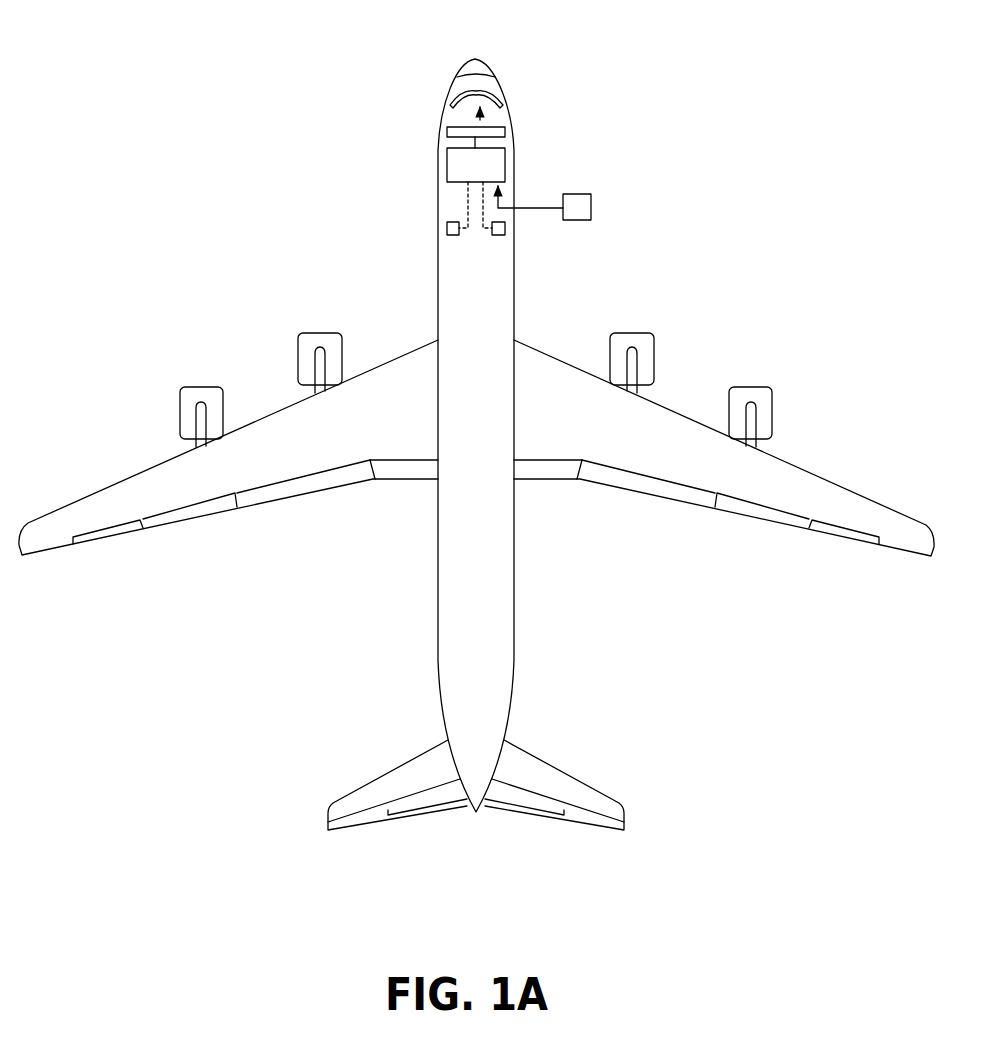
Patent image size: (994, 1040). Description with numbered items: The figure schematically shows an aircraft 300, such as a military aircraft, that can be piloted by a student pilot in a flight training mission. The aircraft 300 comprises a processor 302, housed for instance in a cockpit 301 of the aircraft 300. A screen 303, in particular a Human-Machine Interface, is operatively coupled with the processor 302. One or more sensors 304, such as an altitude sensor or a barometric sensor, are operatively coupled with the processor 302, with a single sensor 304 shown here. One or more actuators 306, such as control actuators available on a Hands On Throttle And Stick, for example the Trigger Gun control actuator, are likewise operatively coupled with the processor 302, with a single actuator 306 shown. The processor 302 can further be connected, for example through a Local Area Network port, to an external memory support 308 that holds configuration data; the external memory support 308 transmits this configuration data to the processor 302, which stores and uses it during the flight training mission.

The aircraft 300 is at (374, 89).
The cockpit 301 is at (484, 99).
The processor 302 is at (500, 167).
The screen 303 is at (500, 133).
The sensor 304 is at (505, 228).
The actuator 306 is at (447, 228).
The external memory support 308 is at (591, 210).